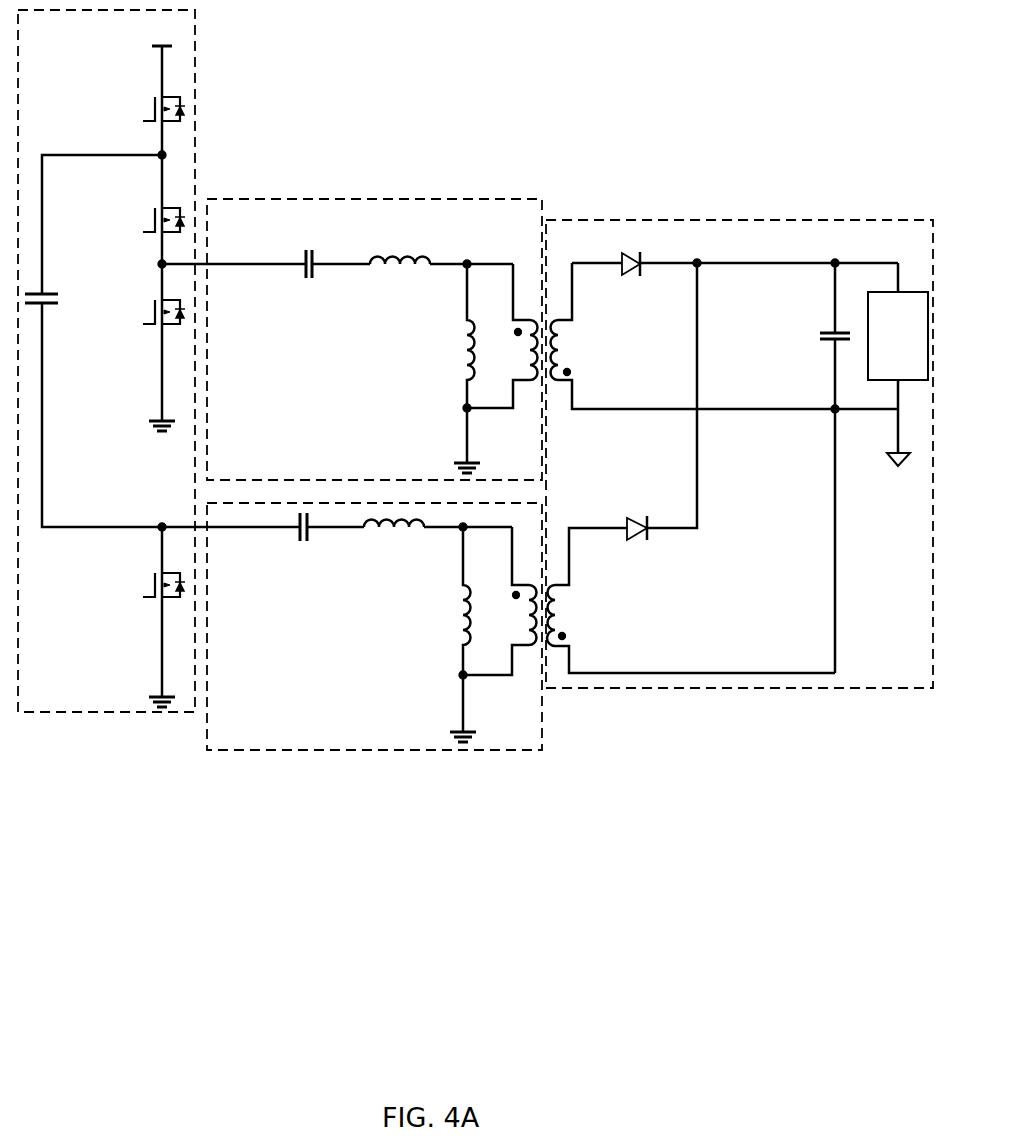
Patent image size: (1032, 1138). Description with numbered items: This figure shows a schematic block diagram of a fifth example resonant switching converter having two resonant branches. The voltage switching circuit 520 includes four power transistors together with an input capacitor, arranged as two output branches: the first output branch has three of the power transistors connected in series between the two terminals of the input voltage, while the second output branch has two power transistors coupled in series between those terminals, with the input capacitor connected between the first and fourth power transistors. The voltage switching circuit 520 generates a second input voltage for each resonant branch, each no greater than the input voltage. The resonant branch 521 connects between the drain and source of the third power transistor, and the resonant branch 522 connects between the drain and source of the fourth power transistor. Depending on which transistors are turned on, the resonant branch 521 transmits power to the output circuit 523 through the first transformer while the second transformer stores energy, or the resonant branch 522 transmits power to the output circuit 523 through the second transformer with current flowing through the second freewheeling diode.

The voltage switching circuit 520 is at (195, 45).
The resonant branch 521 is at (515, 225).
The resonant branch 522 is at (430, 743).
The output circuit 523 is at (767, 220).